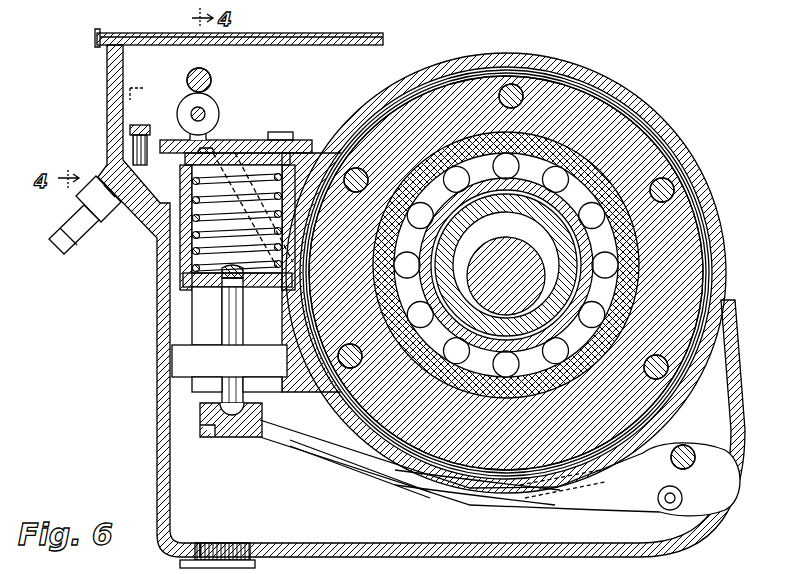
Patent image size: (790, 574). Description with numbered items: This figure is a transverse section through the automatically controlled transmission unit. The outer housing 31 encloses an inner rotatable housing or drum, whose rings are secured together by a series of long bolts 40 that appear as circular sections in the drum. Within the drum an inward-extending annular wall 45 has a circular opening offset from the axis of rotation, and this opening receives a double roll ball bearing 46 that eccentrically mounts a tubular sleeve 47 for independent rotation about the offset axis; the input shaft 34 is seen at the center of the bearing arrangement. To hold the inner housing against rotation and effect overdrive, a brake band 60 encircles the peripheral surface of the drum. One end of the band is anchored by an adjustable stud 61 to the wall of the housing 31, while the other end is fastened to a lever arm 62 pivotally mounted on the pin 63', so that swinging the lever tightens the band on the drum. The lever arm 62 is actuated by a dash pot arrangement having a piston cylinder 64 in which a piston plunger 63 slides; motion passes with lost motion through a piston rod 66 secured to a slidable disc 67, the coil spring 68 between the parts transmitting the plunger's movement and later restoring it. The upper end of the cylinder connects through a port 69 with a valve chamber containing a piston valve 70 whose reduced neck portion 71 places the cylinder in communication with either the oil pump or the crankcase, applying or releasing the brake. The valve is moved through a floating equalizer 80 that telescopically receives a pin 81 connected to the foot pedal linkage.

The housing 31 is at (160, 430).
The input shaft 34 is at (535, 255).
The long bolts 40 is at (512, 84).
The annular wall 45 is at (445, 455).
The double roll ball bearing 46 is at (600, 208).
The tubular sleeve 47 is at (458, 233).
The brake band 60 is at (360, 403).
The adjustable stud 61 is at (275, 133).
The lever arm 62 is at (558, 513).
The piston plunger 63 is at (215, 215).
The pin 63' is at (691, 456).
The piston cylinder 64 is at (188, 334).
The piston rod 66 is at (240, 334).
The slidable disc 67 is at (256, 284).
The coil spring 68 is at (212, 288).
The port 69 is at (208, 150).
The piston valve 70 is at (210, 110).
The reduced neck portion 71 is at (204, 110).
The floating equalizer 80 is at (189, 72).
The pin 81 is at (208, 71).